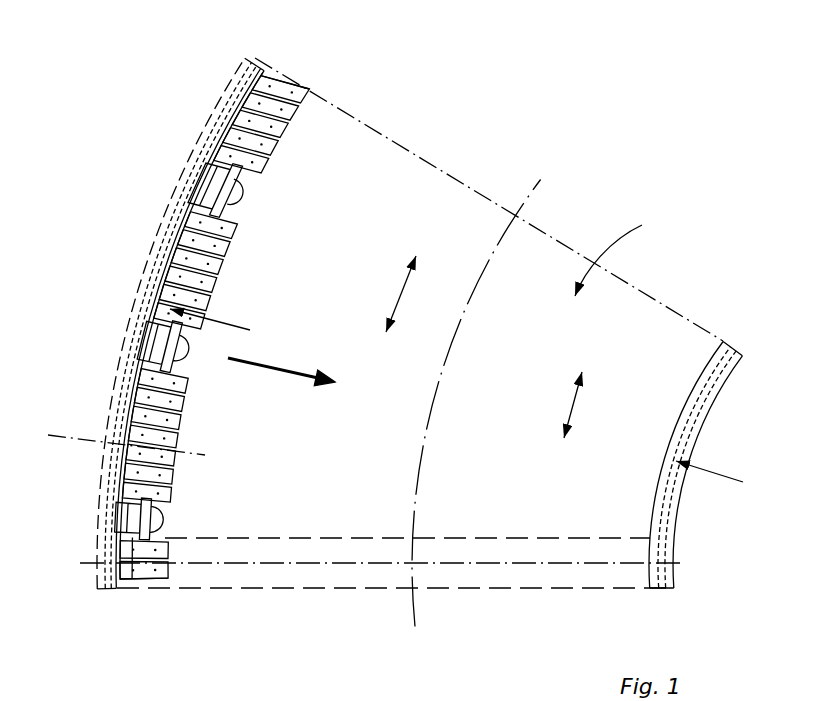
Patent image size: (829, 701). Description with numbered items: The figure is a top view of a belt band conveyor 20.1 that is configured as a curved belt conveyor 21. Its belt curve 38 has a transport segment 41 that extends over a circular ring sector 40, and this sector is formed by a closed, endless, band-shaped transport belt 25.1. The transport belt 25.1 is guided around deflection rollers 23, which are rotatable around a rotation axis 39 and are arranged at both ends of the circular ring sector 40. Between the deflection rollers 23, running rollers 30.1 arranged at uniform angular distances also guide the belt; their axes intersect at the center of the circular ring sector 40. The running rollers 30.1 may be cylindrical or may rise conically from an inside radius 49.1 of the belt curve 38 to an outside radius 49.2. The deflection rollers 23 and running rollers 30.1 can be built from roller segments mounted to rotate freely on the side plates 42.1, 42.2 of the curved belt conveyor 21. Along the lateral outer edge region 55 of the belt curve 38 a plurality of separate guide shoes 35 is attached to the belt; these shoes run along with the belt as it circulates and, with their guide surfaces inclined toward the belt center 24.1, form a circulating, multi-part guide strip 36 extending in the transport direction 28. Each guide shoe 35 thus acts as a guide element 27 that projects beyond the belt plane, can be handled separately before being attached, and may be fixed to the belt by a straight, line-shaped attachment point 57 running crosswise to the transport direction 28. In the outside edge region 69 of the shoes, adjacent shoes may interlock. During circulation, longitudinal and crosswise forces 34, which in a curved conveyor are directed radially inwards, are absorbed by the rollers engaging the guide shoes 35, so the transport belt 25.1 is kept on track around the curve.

The lateral outer edge region 55 is at (270, 57).
The outside edge region 69 is at (283, 68).
The guide shoes 35 is at (268, 153).
The running rollers 30.1 is at (245, 186).
The side plate 42.1 is at (158, 263).
The outside radius 49.2 is at (240, 326).
The transport direction 28 is at (398, 293).
The forces 34 is at (277, 380).
The belt band conveyor 20.1 is at (513, 142).
The curved belt conveyor 21 is at (630, 252).
The transport belt 25.1 is at (680, 330).
The side plate 42.2 is at (708, 412).
The inside radius 49.1 is at (717, 477).
The transport segment 41 is at (574, 407).
The circular ring sector 40 is at (553, 492).
The belt center 24.1 is at (427, 447).
The deflection rollers 23 is at (437, 580).
The rotation axis 39 is at (87, 563).
The line-shaped attachment point 57 is at (65, 432).
The guide strip 36 is at (129, 586).
The guide element 27 is at (139, 576).
The belt curve 38 is at (334, 604).